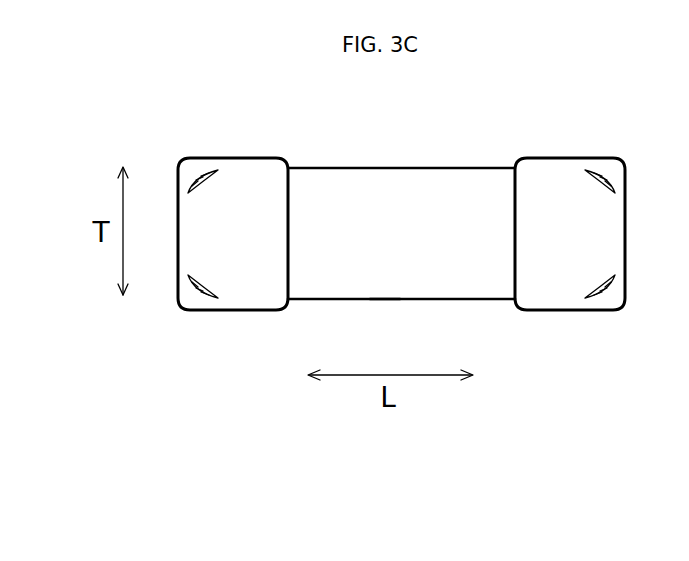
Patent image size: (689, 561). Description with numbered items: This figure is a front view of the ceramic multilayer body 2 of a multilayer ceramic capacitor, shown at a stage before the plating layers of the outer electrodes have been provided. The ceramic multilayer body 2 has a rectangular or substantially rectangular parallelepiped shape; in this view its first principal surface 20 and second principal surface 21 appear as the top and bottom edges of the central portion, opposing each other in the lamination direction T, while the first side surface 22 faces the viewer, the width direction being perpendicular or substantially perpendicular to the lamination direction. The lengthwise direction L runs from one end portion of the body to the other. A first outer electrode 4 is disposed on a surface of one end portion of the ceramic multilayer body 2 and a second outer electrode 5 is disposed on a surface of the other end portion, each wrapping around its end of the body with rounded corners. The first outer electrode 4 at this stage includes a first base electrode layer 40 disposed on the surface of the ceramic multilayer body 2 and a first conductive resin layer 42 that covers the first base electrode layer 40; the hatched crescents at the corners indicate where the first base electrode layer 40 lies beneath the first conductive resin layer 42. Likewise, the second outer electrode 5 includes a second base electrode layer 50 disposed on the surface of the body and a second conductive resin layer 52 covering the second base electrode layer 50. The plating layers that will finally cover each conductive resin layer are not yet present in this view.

The ceramic multilayer body 2 is at (401, 224).
The first principal surface 20 is at (433, 167).
The second principal surface 21 is at (427, 301).
The first side surface 22 is at (390, 280).
The first outer electrode 4 is at (570, 195).
The first base electrode layer 40 is at (607, 175).
The first conductive resin layer 42 is at (550, 176).
The second outer electrode 5 is at (233, 195).
The second base electrode layer 50 is at (190, 177).
The second conductive resin layer 52 is at (250, 175).